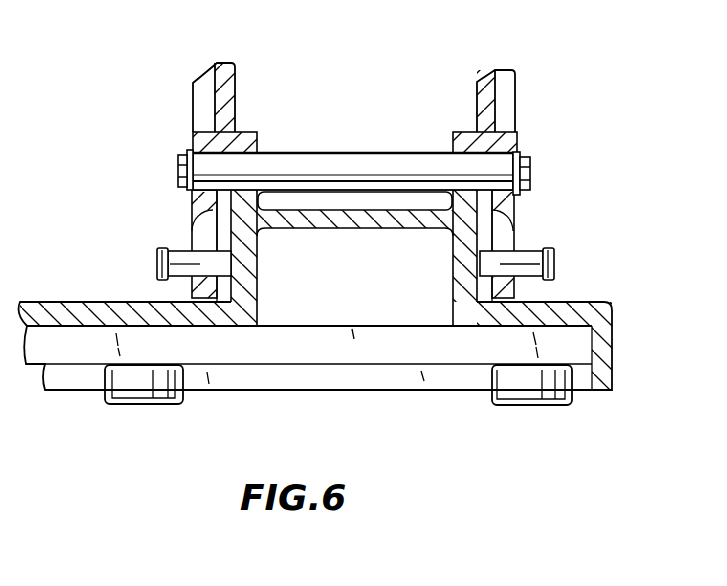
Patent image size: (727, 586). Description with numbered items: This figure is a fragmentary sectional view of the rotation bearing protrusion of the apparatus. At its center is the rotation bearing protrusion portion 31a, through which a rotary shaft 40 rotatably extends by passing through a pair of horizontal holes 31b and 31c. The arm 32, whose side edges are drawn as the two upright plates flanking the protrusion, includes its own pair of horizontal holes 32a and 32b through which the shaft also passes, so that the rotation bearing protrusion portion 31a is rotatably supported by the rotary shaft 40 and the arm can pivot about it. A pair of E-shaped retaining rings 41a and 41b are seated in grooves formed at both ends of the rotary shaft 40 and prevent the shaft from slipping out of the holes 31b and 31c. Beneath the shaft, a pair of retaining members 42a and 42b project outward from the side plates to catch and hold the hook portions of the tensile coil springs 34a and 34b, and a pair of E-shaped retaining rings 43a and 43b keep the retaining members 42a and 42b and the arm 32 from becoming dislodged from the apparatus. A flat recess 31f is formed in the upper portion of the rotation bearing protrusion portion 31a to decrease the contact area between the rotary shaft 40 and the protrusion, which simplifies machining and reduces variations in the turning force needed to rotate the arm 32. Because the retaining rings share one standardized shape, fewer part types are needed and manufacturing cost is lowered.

The rotation bearing protrusion portion 31a is at (462, 264).
The horizontal hole 31b is at (455, 187).
The horizontal hole 31c is at (243, 187).
The flat recess 31f is at (336, 204).
The arm 32 is at (479, 71).
The horizontal hole 32a is at (493, 141).
The horizontal hole 32b is at (208, 147).
The tensile coil spring 34a is at (552, 244).
The tensile coil spring 34b is at (156, 243).
The rotary shaft 40 is at (381, 162).
The E-shaped retaining ring 41a is at (521, 151).
The E-shaped retaining ring 41b is at (190, 148).
The retaining member 42a is at (553, 260).
The retaining member 42b is at (157, 265).
The E-shaped retaining ring 43a is at (472, 287).
The E-shaped retaining ring 43b is at (228, 291).